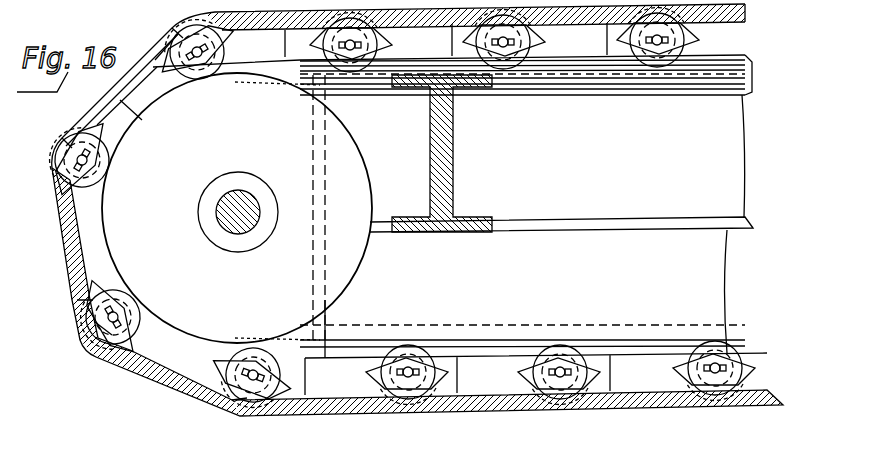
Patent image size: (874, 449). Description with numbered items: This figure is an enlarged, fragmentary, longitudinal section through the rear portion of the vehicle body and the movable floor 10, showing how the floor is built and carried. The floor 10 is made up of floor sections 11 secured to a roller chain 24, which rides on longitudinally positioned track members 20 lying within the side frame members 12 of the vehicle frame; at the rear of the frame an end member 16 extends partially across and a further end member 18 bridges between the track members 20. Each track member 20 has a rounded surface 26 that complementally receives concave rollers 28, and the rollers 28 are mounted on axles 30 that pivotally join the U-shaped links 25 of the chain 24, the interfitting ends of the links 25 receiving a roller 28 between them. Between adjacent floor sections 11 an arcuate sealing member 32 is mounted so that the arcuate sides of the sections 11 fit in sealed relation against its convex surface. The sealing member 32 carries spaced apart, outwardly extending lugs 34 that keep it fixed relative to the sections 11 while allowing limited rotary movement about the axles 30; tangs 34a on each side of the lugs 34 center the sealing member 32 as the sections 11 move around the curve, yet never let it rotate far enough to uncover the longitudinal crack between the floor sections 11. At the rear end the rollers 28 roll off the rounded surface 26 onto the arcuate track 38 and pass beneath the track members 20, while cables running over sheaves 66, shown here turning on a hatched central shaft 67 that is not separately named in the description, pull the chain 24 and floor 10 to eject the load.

The movable floor 10 is at (323, 413).
The floor sections 11 is at (97, 97).
The side frame members 12 is at (723, 280).
The end member 16 is at (327, 323).
The further end member 18 is at (453, 173).
The track members 20 is at (588, 210).
The roller chain 24 is at (730, 45).
The links 25 is at (557, 47).
The rounded surface 26 is at (575, 50).
The concave rollers 28 is at (657, 63).
The axles 30 is at (556, 406).
The arcuate sealing member 32 is at (50, 153).
The lugs 34 is at (90, 345).
The tangs 34a is at (313, 45).
The arcuate track 38 is at (67, 205).
The sheaves 66 is at (348, 255).
The drum shaft 67 is at (230, 228).